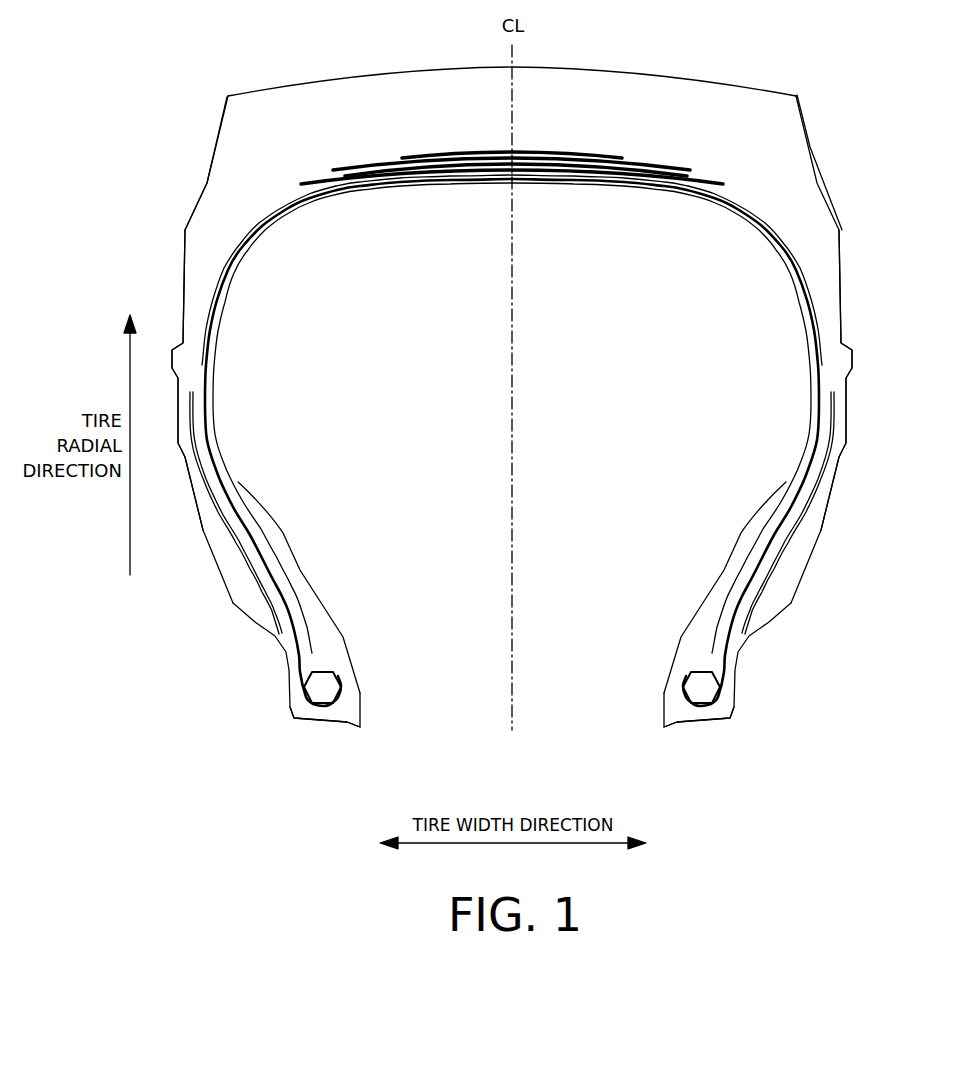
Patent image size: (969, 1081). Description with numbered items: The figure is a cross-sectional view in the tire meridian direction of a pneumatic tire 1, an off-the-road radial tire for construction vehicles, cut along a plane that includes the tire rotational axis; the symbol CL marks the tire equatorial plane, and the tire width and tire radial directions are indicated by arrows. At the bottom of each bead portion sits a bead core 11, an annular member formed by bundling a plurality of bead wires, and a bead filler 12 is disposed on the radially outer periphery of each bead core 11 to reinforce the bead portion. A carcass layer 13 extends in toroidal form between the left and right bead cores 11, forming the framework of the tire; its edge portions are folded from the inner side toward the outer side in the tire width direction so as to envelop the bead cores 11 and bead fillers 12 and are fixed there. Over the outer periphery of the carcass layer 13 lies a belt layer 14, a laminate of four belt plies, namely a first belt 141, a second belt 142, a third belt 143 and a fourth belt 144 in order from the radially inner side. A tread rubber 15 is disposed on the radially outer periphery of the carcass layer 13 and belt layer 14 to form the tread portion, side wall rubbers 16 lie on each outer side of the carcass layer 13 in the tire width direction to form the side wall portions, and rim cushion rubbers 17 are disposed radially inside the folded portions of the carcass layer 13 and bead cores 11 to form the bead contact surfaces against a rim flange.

The pneumatic tire 1 is at (792, 58).
The bead core 11 is at (324, 688).
The bead filler 12 is at (302, 619).
The carcass layer 13 is at (748, 566).
The belt layer 14 is at (512, 207).
The first belt 141 is at (658, 178).
The second belt 142 is at (620, 174).
The third belt 143 is at (583, 174).
The fourth belt 144 is at (512, 188).
The tread rubber 15 is at (799, 161).
The side wall rubber 16 is at (182, 368).
The rim cushion rubber 17 is at (317, 724).